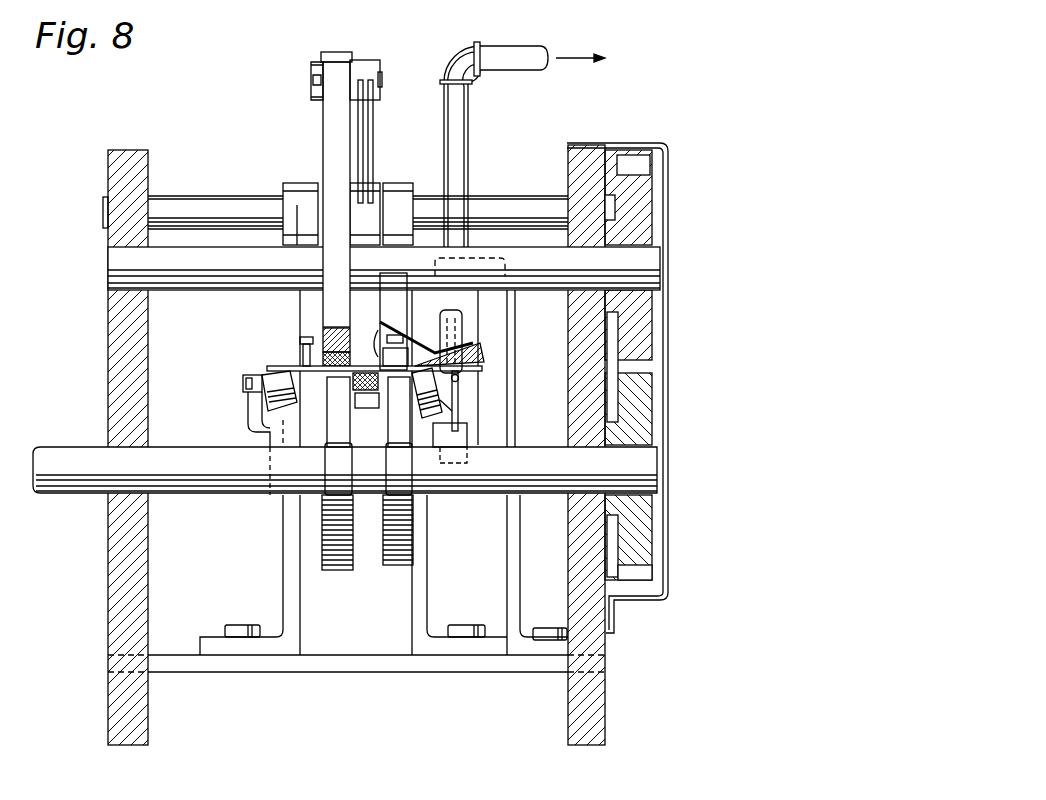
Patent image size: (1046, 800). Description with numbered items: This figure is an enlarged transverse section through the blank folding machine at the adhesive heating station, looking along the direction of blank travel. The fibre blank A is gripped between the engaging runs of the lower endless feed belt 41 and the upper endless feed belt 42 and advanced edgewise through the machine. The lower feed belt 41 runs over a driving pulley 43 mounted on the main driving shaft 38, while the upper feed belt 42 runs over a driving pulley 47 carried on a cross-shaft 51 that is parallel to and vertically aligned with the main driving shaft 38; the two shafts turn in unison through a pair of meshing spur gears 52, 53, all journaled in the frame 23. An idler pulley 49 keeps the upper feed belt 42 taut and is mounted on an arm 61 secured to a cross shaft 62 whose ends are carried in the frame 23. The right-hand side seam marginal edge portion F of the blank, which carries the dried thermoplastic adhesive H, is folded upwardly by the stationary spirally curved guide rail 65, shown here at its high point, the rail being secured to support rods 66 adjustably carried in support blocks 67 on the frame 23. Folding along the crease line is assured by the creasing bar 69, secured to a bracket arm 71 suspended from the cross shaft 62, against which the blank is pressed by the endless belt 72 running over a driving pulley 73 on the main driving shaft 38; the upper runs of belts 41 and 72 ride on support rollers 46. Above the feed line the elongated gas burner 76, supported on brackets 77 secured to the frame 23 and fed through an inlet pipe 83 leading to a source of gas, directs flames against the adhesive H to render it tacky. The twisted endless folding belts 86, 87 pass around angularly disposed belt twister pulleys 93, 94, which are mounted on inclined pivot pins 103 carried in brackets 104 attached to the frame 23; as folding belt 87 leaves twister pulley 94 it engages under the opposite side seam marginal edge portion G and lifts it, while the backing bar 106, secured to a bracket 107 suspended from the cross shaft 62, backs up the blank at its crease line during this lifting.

The frame 23 is at (125, 572).
The main driving shaft 38 is at (78, 482).
The lower endless feed belt 41 is at (333, 455).
The upper endless feed belt 42 is at (334, 296).
The driving pulley 43 is at (326, 560).
The support rollers 46 is at (368, 398).
The driving pulley 47 is at (330, 340).
The idler pulley 49 is at (322, 57).
The cross-shaft 51 is at (223, 278).
The spur gear 52 is at (636, 195).
The spur gear 53 is at (640, 393).
The arm 61 is at (367, 122).
The cross shaft 62 is at (230, 205).
The spirally curved guide rail 65 is at (462, 378).
The support rods 66 is at (461, 404).
The support blocks 67 is at (466, 441).
The creasing bar 69 is at (376, 344).
The bracket arm 71 is at (411, 311).
The endless belt 72 is at (393, 384).
The driving pulley 73 is at (383, 565).
The elongated gas burner 76 is at (470, 313).
The brackets 77 is at (512, 553).
The inlet pipe 83 is at (463, 113).
The twisted endless folding belt 86 is at (424, 402).
The twisted endless folding belt 87 is at (272, 428).
The belt twister pulley 93 is at (452, 411).
The belt twister pulley 94 is at (262, 400).
The inclined pivot pins 103 is at (248, 380).
The brackets 104 is at (246, 420).
The backing bar 106 is at (308, 362).
The bracket 107 is at (303, 225).
The fibre blank A is at (285, 366).
The side seam marginal edge portion F is at (488, 357).
The side seam marginal edge portion G is at (262, 368).
The thermoplastic adhesive H is at (440, 337).